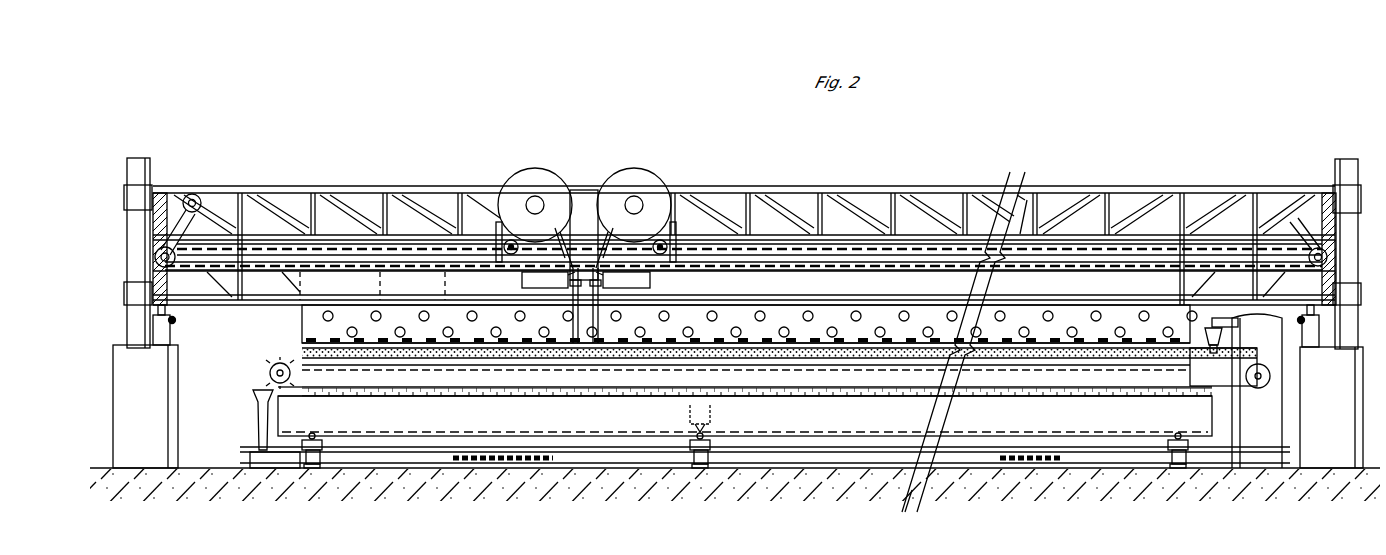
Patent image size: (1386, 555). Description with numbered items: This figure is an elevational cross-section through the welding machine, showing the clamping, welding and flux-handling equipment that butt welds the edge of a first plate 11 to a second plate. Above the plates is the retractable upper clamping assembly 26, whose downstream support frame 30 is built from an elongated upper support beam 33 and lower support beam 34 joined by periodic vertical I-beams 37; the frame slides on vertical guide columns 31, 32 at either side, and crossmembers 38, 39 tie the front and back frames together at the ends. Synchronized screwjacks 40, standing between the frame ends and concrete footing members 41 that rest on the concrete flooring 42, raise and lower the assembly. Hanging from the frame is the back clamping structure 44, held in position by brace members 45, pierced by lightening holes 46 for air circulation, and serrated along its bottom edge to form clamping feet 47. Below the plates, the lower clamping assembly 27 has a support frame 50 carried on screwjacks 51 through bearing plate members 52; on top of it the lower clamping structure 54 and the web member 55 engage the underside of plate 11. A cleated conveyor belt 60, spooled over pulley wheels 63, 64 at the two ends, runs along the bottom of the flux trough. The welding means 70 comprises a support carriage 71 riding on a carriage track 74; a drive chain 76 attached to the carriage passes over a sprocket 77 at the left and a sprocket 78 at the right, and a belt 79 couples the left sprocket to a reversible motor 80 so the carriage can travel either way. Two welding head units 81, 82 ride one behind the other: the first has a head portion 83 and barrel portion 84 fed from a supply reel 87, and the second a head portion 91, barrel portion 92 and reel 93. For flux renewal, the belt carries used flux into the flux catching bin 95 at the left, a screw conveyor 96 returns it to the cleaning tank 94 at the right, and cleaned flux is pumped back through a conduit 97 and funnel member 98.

The first plate 11 is at (302, 328).
The upper clamping assembly 26 is at (856, 297).
The lower clamping assembly 27 is at (866, 419).
The downstream support frame 30 is at (744, 217).
The vertical guide column 31 is at (133, 158).
The vertical guide column 32 is at (1345, 159).
The upper support beam 33 is at (277, 186).
The lower support beam 34 is at (215, 300).
The vertical I-beam 37 is at (295, 200).
The crossmember 38 is at (153, 222).
The crossmember 39 is at (1322, 205).
The screwjack 40 is at (172, 335).
The concrete footing member 41 is at (152, 410).
The concrete flooring 42 is at (190, 468).
The clamping structure 44 is at (300, 310).
The brace member 45 is at (378, 292).
The lightening hole 46 is at (1022, 305).
The clamping foot 47 is at (895, 330).
The support frame 50 is at (760, 465).
The screwjack 51 is at (302, 445).
The bearing plate member 52 is at (715, 408).
The lower clamping structure 54 is at (302, 352).
The web member 55 is at (452, 370).
The conveyor belt 60 is at (310, 378).
The pulley wheel 63 is at (268, 373).
The pulley wheel 64 is at (1268, 385).
The welding means 70 is at (586, 186).
The support carriage 71 is at (498, 222).
The carriage track 74 is at (710, 222).
The drive chain 76 is at (360, 244).
The sprocket 77 is at (155, 257).
The sprocket 78 is at (1313, 240).
The belt 79 is at (190, 222).
The motor 80 is at (200, 195).
The welding head unit 81 is at (568, 296).
The welding head unit 82 is at (604, 296).
The head portion 83 is at (522, 280).
The barrel portion 84 is at (572, 332).
The supply reel 87 is at (540, 168).
The head portion 91 is at (655, 280).
The barrel portion 92 is at (600, 320).
The electrode wire supply reel 93 is at (641, 168).
The cleaning tank 94 is at (1282, 452).
The flux catching bin 95 is at (253, 392).
The screw conveyor 96 is at (855, 490).
The conduit 97 is at (1238, 322).
The funnel member 98 is at (1222, 338).